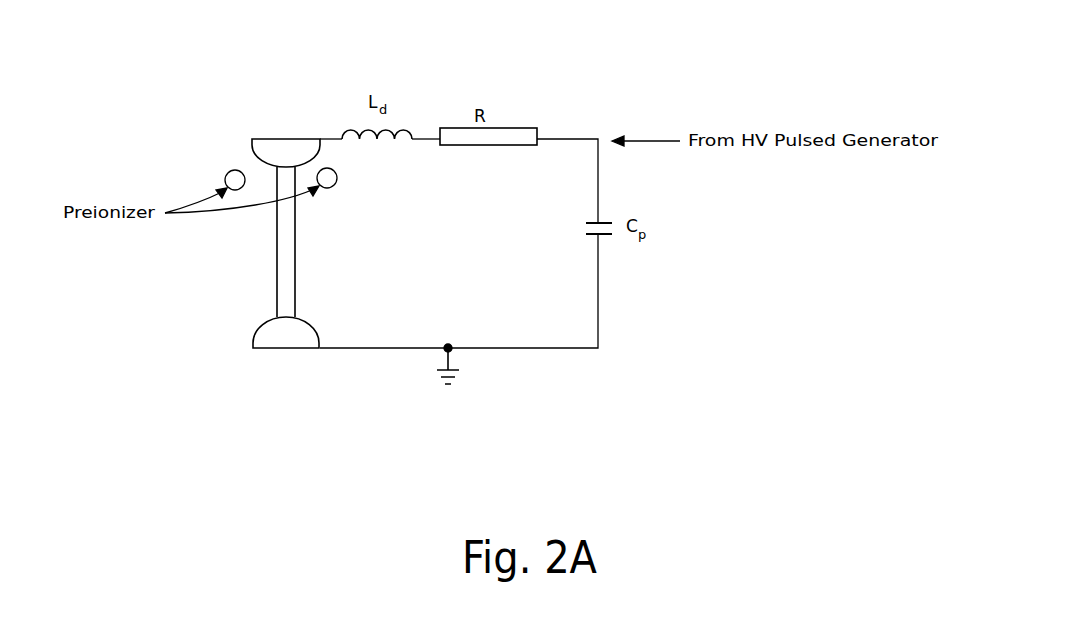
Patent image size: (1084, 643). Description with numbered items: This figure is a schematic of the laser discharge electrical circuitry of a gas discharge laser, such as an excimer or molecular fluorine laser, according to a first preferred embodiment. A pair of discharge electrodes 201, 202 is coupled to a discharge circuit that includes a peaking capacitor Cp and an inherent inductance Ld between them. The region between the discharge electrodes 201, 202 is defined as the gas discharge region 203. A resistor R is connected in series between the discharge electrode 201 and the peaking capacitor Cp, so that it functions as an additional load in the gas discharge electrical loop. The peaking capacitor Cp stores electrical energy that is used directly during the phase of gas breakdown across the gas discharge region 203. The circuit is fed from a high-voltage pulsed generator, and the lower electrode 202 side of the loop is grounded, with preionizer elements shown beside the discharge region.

The discharge electrode 201 is at (257, 157).
The discharge electrode 202 is at (256, 338).
The gas discharge region 203 is at (278, 272).